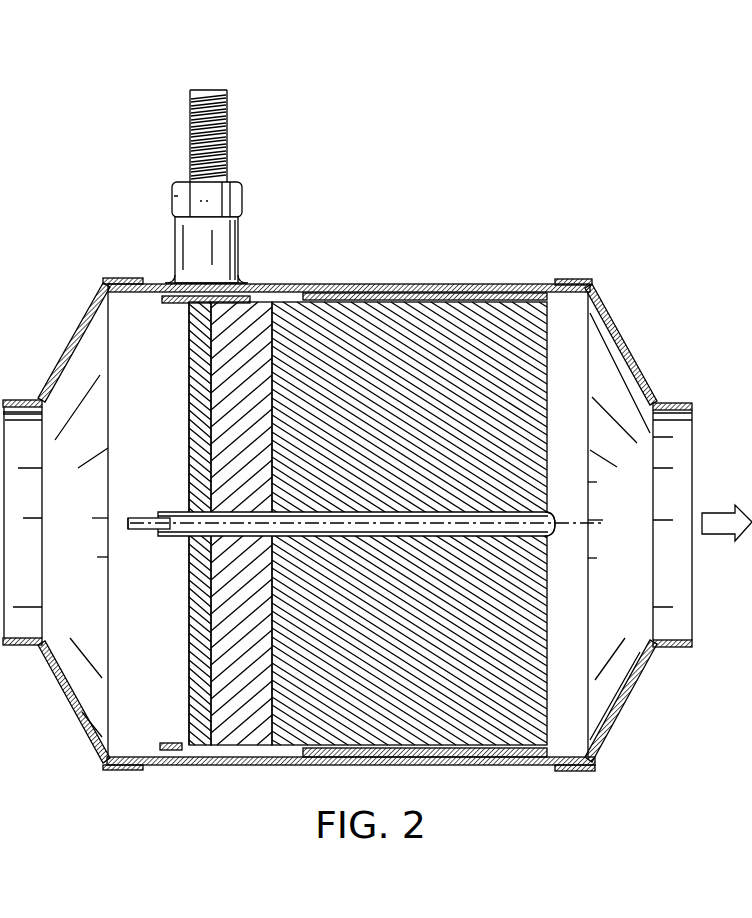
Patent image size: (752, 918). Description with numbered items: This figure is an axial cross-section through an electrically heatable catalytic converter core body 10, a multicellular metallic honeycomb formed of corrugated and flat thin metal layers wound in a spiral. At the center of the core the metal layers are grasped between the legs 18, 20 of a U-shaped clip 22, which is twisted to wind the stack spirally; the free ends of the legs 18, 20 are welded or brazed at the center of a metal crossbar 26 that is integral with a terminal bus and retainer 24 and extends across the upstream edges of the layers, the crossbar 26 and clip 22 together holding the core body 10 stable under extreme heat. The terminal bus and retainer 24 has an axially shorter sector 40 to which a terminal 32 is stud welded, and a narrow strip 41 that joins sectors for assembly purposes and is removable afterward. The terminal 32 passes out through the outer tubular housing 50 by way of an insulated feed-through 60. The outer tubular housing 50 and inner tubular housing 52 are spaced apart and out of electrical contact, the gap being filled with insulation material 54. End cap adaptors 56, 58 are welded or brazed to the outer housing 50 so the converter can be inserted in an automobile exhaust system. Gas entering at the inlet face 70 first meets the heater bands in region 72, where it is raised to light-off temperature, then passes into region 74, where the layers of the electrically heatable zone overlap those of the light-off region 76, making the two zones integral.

The core body 10 is at (377, 518).
The leg of U-shaped clip 18 is at (144, 568).
The leg of U-shaped clip 20 is at (378, 541).
The U-shaped clip 22 is at (553, 516).
The terminal bus and retainer 24 is at (170, 310).
The metal crossbar 26 is at (132, 526).
The terminal 32 is at (217, 133).
The axially shorter sector 40 is at (248, 283).
The narrow strip 41 is at (172, 742).
The outer tubular housing 50 is at (461, 286).
The inner tubular housing 52 is at (430, 551).
The insulation material 54 is at (341, 290).
The end cap adaptor 56 is at (70, 343).
The end cap adaptor 58 is at (628, 342).
The insulated feed-through 60 is at (246, 227).
The inlet face 70 is at (190, 640).
The heater band region 72 is at (197, 377).
The overlapping region 74 is at (240, 422).
The light-off region 76 is at (510, 463).